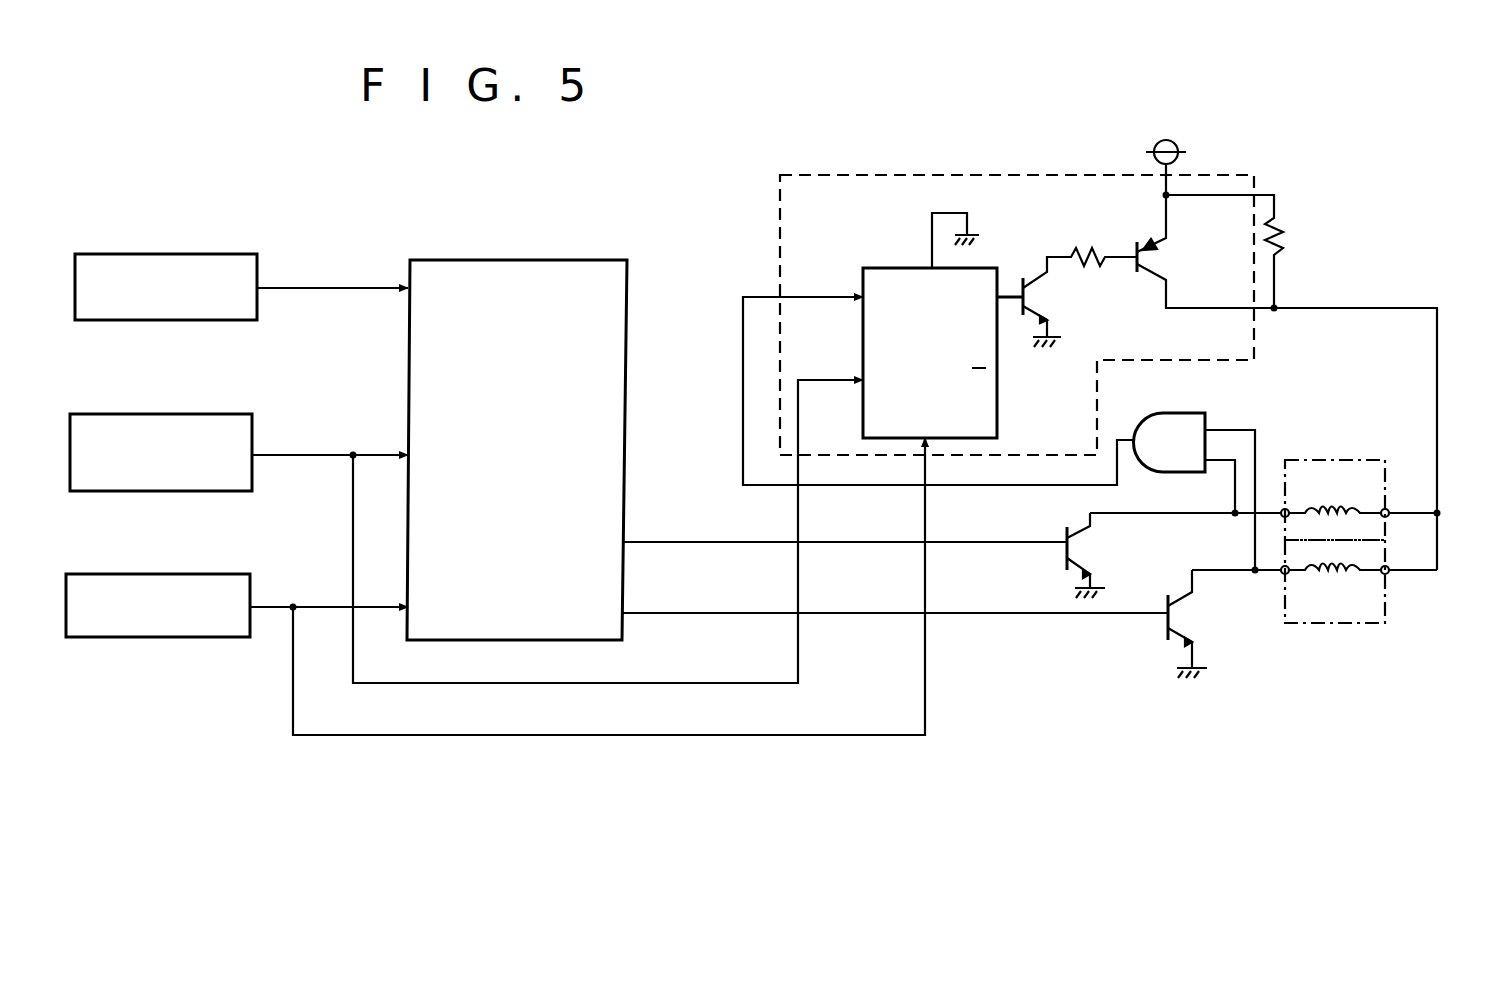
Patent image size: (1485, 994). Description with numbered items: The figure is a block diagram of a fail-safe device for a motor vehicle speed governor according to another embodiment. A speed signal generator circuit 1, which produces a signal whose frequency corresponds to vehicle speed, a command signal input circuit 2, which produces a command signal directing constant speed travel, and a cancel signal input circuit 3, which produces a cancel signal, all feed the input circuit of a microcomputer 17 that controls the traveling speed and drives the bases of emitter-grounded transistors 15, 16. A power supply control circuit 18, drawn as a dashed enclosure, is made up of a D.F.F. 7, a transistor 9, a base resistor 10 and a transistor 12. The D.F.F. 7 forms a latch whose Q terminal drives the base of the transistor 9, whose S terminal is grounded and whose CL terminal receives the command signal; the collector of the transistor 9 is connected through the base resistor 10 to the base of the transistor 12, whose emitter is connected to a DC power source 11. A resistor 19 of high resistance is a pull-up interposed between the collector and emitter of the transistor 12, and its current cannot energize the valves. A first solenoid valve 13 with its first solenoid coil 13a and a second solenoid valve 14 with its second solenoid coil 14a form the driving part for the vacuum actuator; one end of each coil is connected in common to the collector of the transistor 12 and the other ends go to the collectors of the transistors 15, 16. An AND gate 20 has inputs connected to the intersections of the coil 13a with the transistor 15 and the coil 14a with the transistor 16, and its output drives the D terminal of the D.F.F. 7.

The speed signal generator circuit 1 is at (120, 255).
The command signal input circuit 2 is at (107, 413).
The cancel signal input circuit 3 is at (104, 572).
The microcomputer 17 is at (442, 259).
The D.F.F. 7 is at (997, 398).
The power supply control circuit 18 is at (960, 167).
The transistor 9 is at (1048, 297).
The base resistor 10 is at (1086, 254).
The DC power source 11 is at (1178, 144).
The transistor 12 is at (1150, 262).
The resistor 19 is at (1285, 234).
The AND gate 20 is at (1186, 413).
The first solenoid valve 13 is at (1338, 460).
The first solenoid coil 13a is at (1336, 508).
The second solenoid valve 14 is at (1345, 623).
The second solenoid coil 14a is at (1330, 578).
The transistor 15 is at (1080, 550).
The transistor 16 is at (1182, 615).